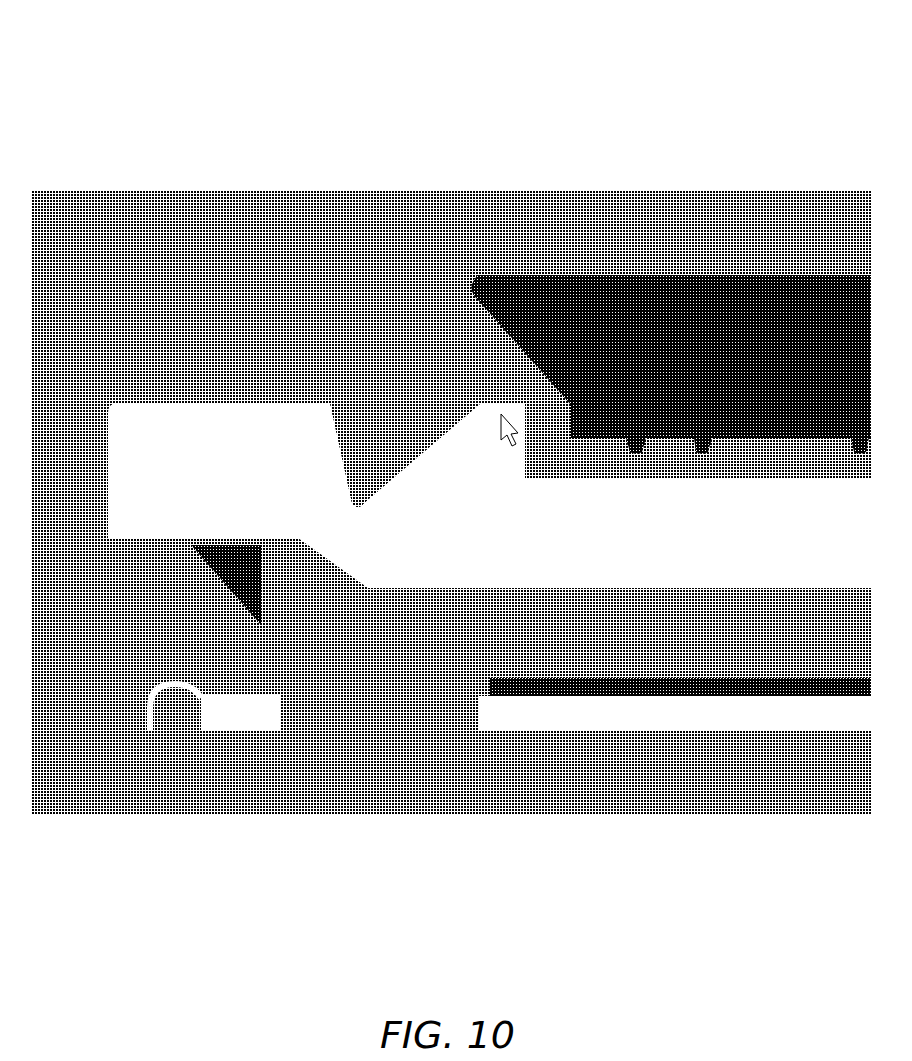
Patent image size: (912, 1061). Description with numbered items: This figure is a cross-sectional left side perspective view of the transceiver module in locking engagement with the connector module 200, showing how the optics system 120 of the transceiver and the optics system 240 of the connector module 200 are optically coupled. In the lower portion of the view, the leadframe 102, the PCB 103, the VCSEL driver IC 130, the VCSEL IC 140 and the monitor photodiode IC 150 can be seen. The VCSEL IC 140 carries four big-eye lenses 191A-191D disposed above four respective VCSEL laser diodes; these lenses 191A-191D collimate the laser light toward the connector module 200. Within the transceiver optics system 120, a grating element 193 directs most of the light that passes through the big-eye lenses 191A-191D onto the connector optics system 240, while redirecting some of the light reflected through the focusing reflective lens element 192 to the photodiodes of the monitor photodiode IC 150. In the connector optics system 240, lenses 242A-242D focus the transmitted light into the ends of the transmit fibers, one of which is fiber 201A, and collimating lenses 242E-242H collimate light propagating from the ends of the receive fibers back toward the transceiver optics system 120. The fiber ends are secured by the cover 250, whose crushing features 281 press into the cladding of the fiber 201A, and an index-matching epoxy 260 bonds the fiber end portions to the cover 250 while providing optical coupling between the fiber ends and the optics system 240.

The connector module 200 is at (140, 268).
The optics system 240 is at (172, 478).
The collimating lenses 242E-242H is at (382, 342).
The lenses 242A-242D is at (428, 413).
The index-matching epoxy 260 is at (508, 333).
The cover 250 is at (635, 303).
The fiber 201A is at (730, 453).
The crushing features 281 is at (627, 432).
The focusing reflective lens element 192 is at (237, 557).
The optics system 120 is at (133, 605).
The monitor photodiode IC 150 is at (222, 700).
The VCSEL IC 140 is at (380, 702).
The big-eye lenses 191A-191D is at (405, 670).
The grating element 193 is at (423, 648).
The VCSEL driver IC 130 is at (508, 702).
The leadframe 102 is at (710, 765).
The PCB 103 is at (755, 807).